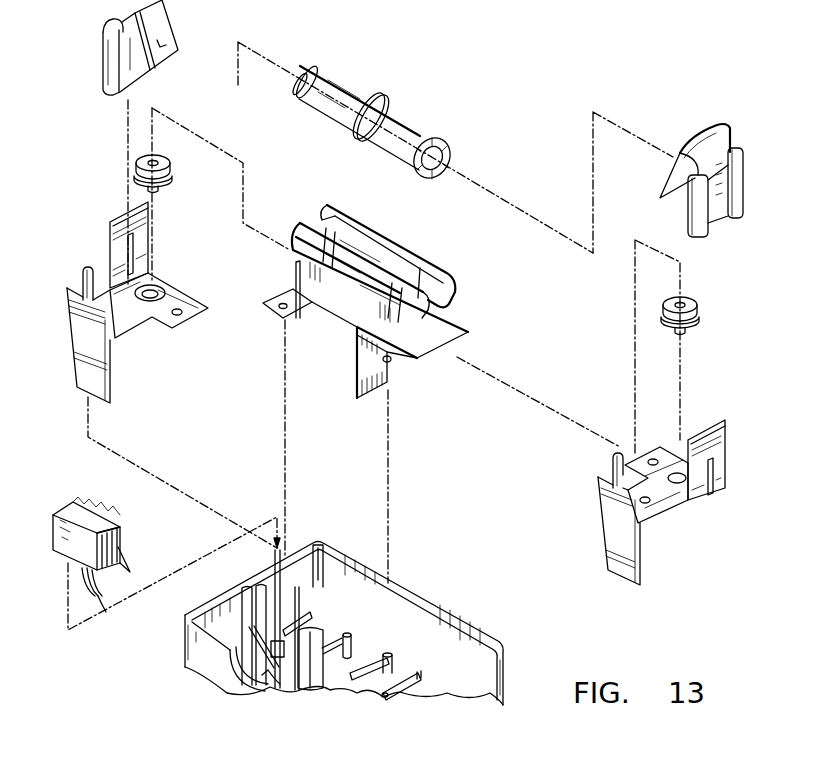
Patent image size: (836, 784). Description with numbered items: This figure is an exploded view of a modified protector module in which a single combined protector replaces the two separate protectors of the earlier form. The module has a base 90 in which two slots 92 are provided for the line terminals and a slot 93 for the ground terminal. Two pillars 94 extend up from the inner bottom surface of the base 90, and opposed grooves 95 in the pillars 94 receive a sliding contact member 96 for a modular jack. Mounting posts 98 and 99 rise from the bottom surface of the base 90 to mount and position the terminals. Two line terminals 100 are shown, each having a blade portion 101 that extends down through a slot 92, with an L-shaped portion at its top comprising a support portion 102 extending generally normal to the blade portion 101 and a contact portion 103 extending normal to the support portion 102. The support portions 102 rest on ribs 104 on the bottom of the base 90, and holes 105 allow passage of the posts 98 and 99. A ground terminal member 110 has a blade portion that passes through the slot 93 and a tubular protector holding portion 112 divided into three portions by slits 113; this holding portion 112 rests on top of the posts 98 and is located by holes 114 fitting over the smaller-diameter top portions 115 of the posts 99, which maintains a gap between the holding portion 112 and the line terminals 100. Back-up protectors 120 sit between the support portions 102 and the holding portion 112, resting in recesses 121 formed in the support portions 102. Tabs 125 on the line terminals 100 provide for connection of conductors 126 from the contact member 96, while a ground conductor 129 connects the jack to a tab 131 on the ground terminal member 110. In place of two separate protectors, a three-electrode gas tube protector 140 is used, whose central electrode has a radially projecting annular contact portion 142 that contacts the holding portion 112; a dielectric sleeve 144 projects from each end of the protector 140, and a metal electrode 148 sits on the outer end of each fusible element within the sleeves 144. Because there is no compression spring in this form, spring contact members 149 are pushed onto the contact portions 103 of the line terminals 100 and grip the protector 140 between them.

The base 90 is at (348, 623).
The slots for line terminals 92 is at (242, 688).
The slot for ground terminal 93 is at (360, 677).
The pillars 94 is at (243, 610).
The grooves 95 is at (245, 586).
The contact member 96 is at (273, 330).
The mounting posts 98 is at (390, 655).
The mounting posts 99 is at (286, 677).
The line terminals 100 is at (378, 411).
The blade portion 101 is at (136, 332).
The support portion 102 is at (173, 288).
The contact portion 103 is at (110, 232).
The ribs 104 is at (297, 587).
The holes 105 is at (205, 309).
The ground terminal member 110 is at (354, 297).
The protector holding portion 112 is at (345, 300).
The slits 113 is at (360, 222).
The holes 114 is at (293, 318).
The top portions of the posts 115 is at (272, 680).
The back-up protectors 120 is at (136, 168).
The recesses 121 is at (155, 286).
The tabs 125 is at (83, 275).
The conductors 126 is at (102, 587).
The conductor 129 is at (102, 600).
The tab 131 is at (294, 280).
The three-electrode gas tube protector 140 is at (403, 112).
The annular contact portion 142 is at (393, 100).
The dielectric sleeve 144 is at (337, 82).
The metal electrode 148 is at (308, 70).
The spring contact members 149 is at (163, 25).